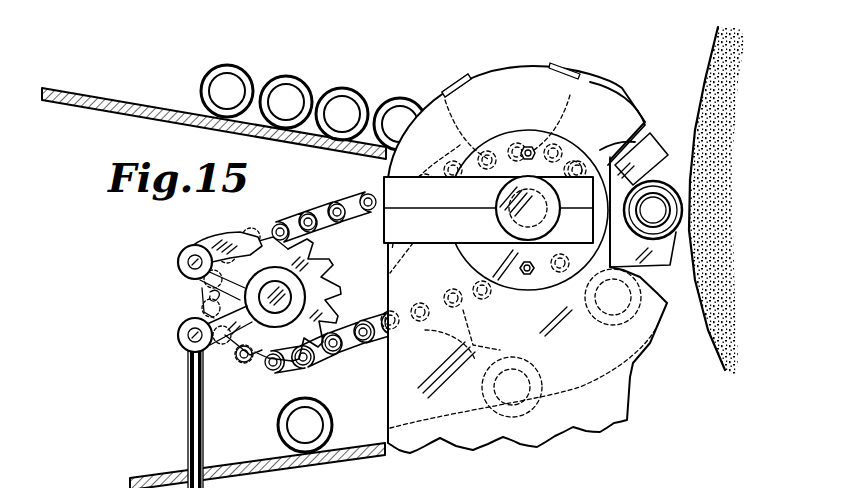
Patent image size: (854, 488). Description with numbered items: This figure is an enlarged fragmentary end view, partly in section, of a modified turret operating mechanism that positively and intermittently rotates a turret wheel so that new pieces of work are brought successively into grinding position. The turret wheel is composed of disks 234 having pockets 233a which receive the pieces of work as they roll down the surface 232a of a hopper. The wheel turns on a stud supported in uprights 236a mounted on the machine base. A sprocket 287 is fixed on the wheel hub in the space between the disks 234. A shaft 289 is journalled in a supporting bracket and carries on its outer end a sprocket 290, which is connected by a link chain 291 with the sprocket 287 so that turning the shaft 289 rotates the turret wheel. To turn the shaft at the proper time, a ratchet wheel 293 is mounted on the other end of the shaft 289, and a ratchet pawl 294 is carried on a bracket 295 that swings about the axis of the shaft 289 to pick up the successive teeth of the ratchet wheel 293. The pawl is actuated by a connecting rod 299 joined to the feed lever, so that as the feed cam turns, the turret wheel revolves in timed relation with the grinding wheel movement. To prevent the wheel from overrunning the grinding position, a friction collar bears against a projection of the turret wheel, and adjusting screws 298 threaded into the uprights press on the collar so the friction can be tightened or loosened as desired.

The hopper surface 232a is at (167, 110).
The sprocket 287 is at (457, 87).
The pockets 233a is at (515, 97).
The adjusting screws 298 is at (530, 147).
The uprights 236a is at (604, 114).
The disks 234 is at (657, 148).
The link chain 291 is at (340, 203).
The sprocket 290 is at (333, 279).
The shaft 289 is at (283, 307).
The ratchet pawl 294 is at (220, 235).
The bracket 295 is at (190, 270).
The ratchet wheel 293 is at (260, 335).
The connecting rod 299 is at (188, 418).